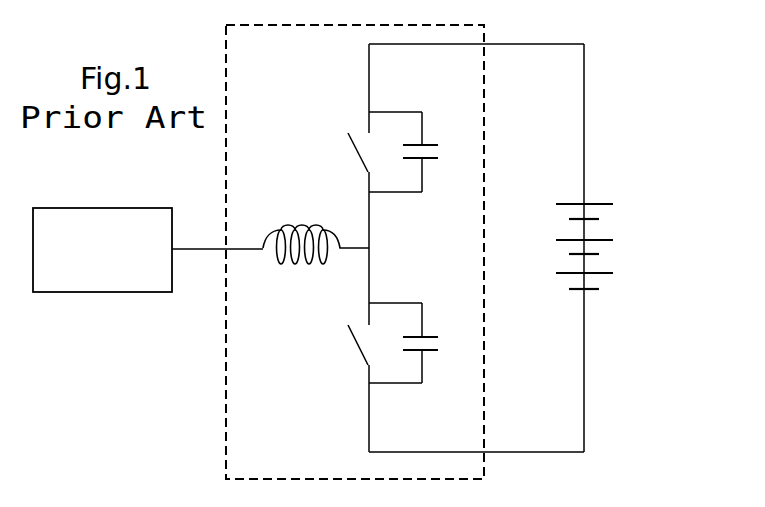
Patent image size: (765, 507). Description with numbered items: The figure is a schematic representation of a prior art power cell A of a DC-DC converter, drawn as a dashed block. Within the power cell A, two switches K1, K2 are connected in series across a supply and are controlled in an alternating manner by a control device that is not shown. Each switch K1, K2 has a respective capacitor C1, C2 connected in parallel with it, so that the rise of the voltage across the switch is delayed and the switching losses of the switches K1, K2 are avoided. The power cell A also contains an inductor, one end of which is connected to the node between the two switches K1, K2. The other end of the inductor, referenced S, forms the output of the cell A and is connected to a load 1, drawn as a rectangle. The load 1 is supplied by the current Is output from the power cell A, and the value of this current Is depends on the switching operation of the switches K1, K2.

The load 1 is at (95, 208).
The output of the cell S is at (217, 237).
The power cell A is at (254, 55).
The current output from the power cell Is is at (304, 243).
The first switch K1 is at (358, 155).
The second switch K2 is at (358, 348).
The first capacitor C1 is at (435, 152).
The second capacitor C2 is at (435, 343).